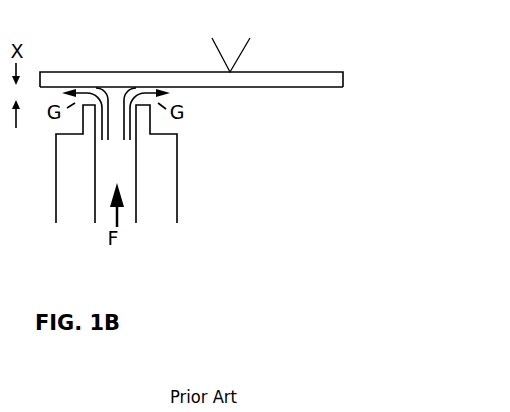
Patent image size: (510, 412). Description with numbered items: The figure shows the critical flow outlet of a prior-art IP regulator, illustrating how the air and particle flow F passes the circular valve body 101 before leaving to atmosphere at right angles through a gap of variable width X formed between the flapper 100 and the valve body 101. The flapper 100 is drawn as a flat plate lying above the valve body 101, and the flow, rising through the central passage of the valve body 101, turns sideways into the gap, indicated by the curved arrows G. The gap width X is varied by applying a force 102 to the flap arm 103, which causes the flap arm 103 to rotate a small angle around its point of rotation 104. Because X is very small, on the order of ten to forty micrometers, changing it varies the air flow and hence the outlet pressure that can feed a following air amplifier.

The flapper 100 is at (77, 72).
The valve body 101 is at (177, 180).
The force 102 is at (322, 96).
The flap arm 103 is at (287, 72).
The point of rotation 104 is at (229, 87).